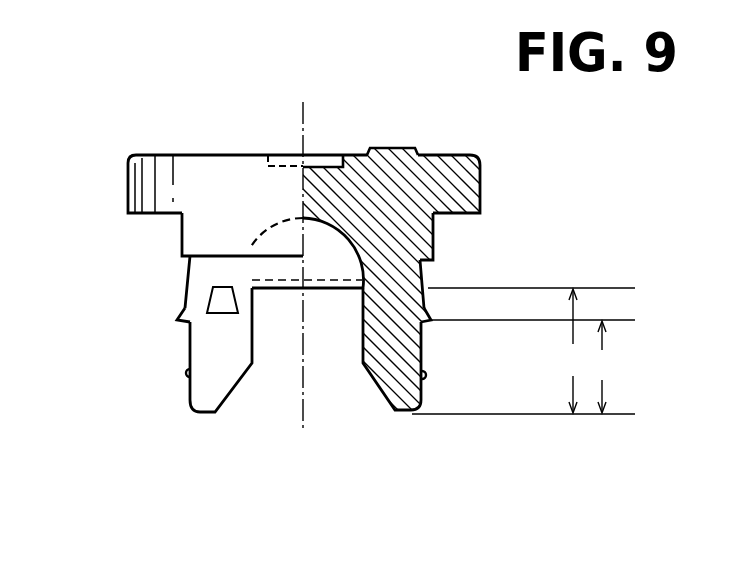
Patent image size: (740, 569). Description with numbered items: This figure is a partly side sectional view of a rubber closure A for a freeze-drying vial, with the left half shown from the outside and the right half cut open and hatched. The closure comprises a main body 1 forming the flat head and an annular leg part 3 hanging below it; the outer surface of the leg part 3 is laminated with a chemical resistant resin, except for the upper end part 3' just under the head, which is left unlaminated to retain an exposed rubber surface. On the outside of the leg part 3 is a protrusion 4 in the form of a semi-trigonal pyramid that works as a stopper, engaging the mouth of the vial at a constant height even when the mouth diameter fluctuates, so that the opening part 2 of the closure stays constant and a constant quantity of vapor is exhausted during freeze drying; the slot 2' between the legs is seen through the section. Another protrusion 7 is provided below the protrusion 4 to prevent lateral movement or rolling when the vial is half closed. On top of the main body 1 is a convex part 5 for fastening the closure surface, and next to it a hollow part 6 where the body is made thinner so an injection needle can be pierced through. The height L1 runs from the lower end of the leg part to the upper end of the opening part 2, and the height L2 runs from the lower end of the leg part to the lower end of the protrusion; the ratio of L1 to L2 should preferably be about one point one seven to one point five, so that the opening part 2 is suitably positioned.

The main body 1 is at (481, 165).
The opening part 2 is at (307, 356).
The slot between legs 2' is at (307, 353).
The leg part 3 is at (339, 334).
The upper end part of the leg part 3' is at (341, 236).
The protrusion 4 is at (183, 306).
The convex part 5 is at (390, 148).
The hollow part 6 is at (322, 156).
The another protrusion 7 is at (186, 373).
The rubber closure A is at (127, 182).
The height from the lower end of the leg part to the upper end of the opening part L1 is at (523, 351).
The height from the lower end of the leg part to the lower end of the protrusion L2 is at (533, 366).